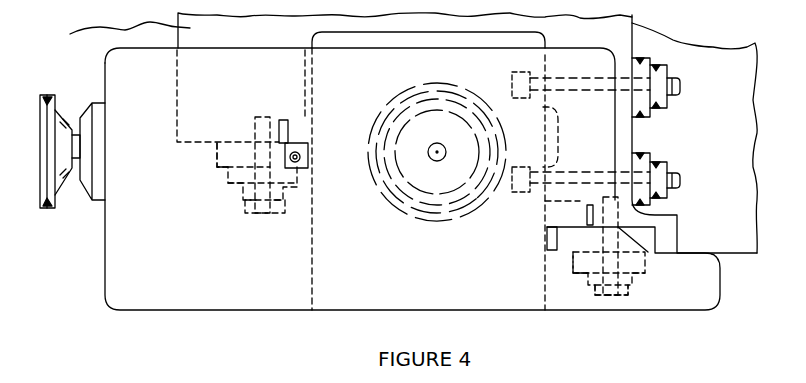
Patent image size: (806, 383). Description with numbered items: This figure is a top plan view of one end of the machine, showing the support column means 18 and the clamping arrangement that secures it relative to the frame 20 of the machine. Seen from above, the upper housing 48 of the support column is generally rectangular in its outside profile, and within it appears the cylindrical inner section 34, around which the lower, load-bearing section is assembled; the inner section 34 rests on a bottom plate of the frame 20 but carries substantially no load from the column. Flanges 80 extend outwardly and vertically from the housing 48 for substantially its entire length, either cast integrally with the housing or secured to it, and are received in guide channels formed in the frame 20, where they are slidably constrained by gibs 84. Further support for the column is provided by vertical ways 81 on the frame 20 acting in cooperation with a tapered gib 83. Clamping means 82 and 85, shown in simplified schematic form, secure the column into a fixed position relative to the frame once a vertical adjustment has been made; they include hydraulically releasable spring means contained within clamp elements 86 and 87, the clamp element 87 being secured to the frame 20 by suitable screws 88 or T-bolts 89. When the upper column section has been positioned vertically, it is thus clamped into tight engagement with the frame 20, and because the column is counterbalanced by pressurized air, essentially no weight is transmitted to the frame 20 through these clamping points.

The support column means 18 is at (258, 295).
The frame 20 is at (70, 34).
The cylindrical inner section 34 is at (415, 192).
The upper housing 48 is at (332, 312).
The flanges 80 is at (302, 130).
The vertical ways 81 is at (545, 105).
The clamping means 82 is at (222, 193).
The tapered gib 83 is at (305, 168).
The gibs 84 is at (222, 155).
The clamping means 85 is at (670, 62).
The clamp element 86 is at (283, 198).
The clamp element 87 is at (647, 72).
The screws 88 is at (250, 215).
The T-bolts 89 is at (575, 80).